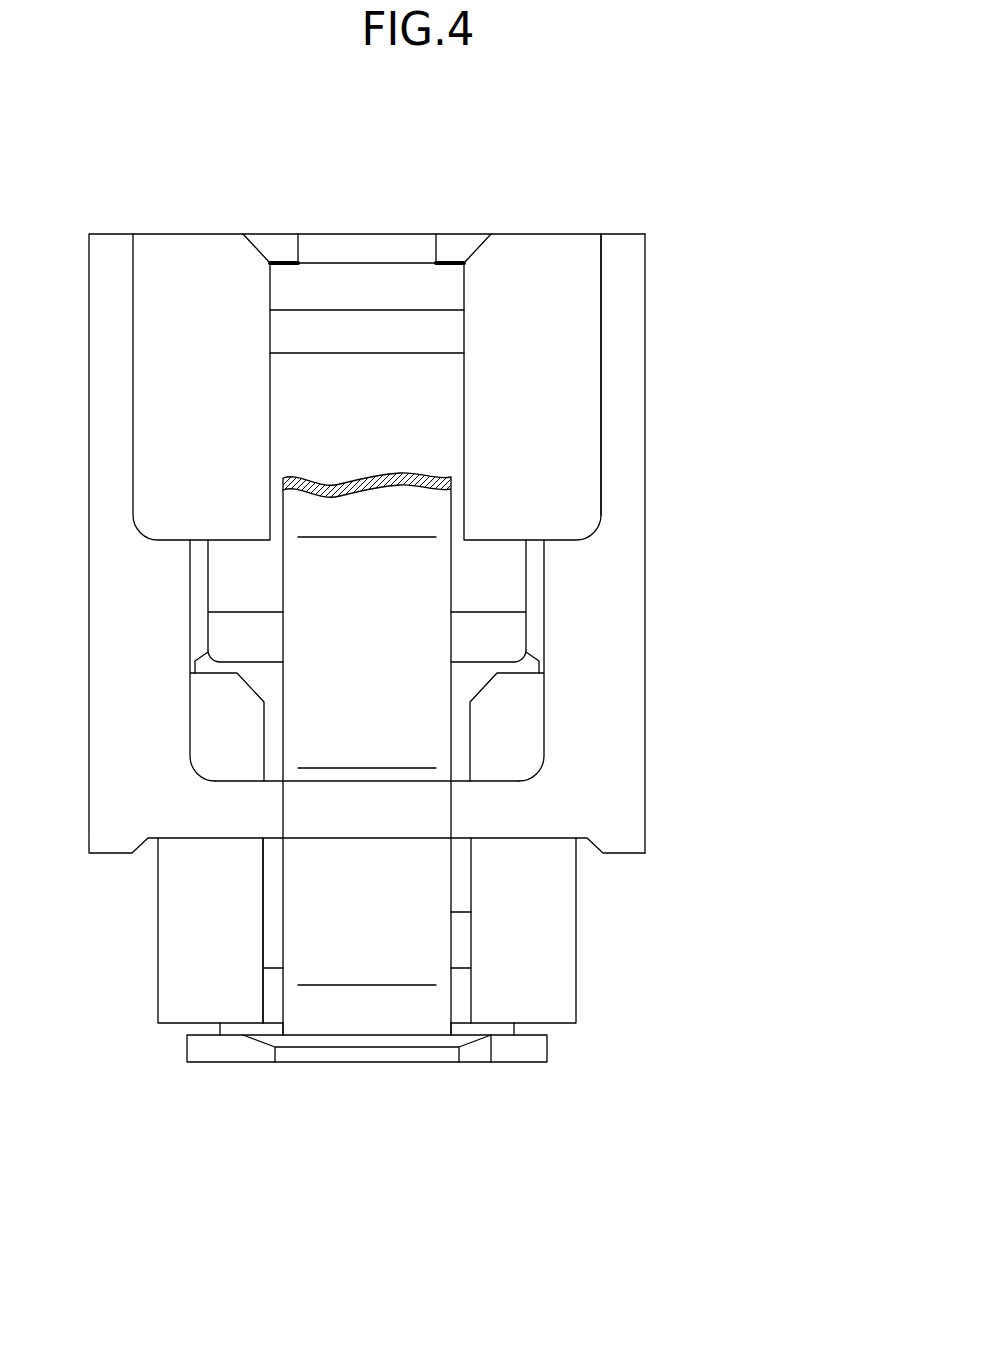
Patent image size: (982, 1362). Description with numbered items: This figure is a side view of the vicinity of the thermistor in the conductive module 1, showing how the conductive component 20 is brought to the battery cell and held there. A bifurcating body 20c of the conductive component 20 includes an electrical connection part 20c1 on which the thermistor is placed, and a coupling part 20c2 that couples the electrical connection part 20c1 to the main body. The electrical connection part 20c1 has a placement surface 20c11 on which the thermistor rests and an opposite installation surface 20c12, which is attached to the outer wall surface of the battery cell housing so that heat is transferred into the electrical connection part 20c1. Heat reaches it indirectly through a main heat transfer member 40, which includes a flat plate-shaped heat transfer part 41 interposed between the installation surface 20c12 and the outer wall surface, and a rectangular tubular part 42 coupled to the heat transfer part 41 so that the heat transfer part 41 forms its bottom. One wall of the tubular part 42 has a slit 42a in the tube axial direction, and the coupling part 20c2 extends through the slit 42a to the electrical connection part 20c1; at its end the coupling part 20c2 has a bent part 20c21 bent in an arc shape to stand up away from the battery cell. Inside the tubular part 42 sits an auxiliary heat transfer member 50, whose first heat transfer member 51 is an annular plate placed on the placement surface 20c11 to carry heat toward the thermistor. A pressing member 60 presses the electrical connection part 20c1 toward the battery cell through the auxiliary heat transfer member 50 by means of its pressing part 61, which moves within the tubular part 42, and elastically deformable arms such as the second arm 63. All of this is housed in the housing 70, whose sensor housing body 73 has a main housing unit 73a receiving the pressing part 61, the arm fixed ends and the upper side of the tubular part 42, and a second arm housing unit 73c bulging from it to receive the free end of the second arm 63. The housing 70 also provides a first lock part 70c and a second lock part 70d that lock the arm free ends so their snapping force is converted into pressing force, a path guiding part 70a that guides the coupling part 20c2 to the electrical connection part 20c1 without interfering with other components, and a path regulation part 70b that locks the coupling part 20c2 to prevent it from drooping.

The conductive module 1 is at (367, 1104).
The conductive component 20 is at (507, 785).
The bifurcating body 20c is at (395, 466).
The electrical connection part 20c1 is at (451, 1054).
The placement surface 20c11 is at (503, 1030).
The installation surface 20c12 is at (505, 1040).
The coupling part 20c2 is at (455, 912).
The bent part 20c21 is at (325, 1015).
The main heat transfer member 40 is at (328, 1026).
The heat transfer part 41 is at (218, 1062).
The tubular part 42 is at (328, 1004).
The slit 42a is at (273, 935).
The auxiliary heat transfer member 50 is at (491, 930).
The first heat transfer member 51 is at (465, 985).
The pressing member 60 is at (530, 590).
The pressing part 61 is at (541, 657).
The second arm 63 is at (446, 282).
The housing 70 is at (445, 479).
The path guiding part 70a is at (517, 715).
The path regulation part 70b is at (490, 772).
The first lock part 70c is at (376, 245).
The second lock part 70d is at (215, 243).
The sensor housing body 73 is at (673, 275).
The main housing unit 73a is at (647, 520).
The second arm housing unit 73c is at (602, 334).